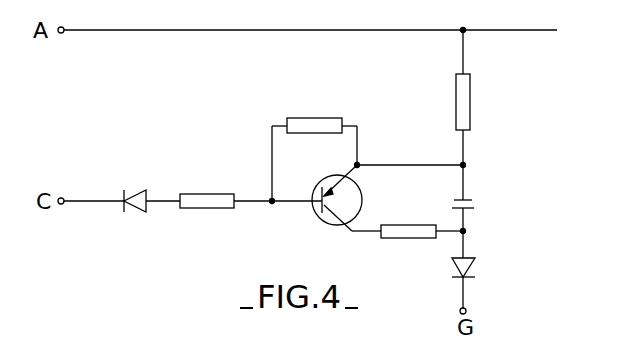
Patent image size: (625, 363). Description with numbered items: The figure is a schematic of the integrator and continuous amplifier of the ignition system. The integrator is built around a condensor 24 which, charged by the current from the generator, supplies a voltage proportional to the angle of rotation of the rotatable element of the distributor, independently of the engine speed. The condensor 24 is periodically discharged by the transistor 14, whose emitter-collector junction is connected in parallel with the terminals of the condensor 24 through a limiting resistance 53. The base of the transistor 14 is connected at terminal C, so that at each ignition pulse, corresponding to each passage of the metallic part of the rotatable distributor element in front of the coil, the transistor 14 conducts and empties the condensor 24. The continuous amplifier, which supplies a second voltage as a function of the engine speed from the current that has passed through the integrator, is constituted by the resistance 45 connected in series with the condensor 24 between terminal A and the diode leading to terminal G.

The transistor 14 is at (328, 219).
The condensor 24 is at (474, 208).
The resistance 45 is at (466, 100).
The limiting resistance 53 is at (403, 228).